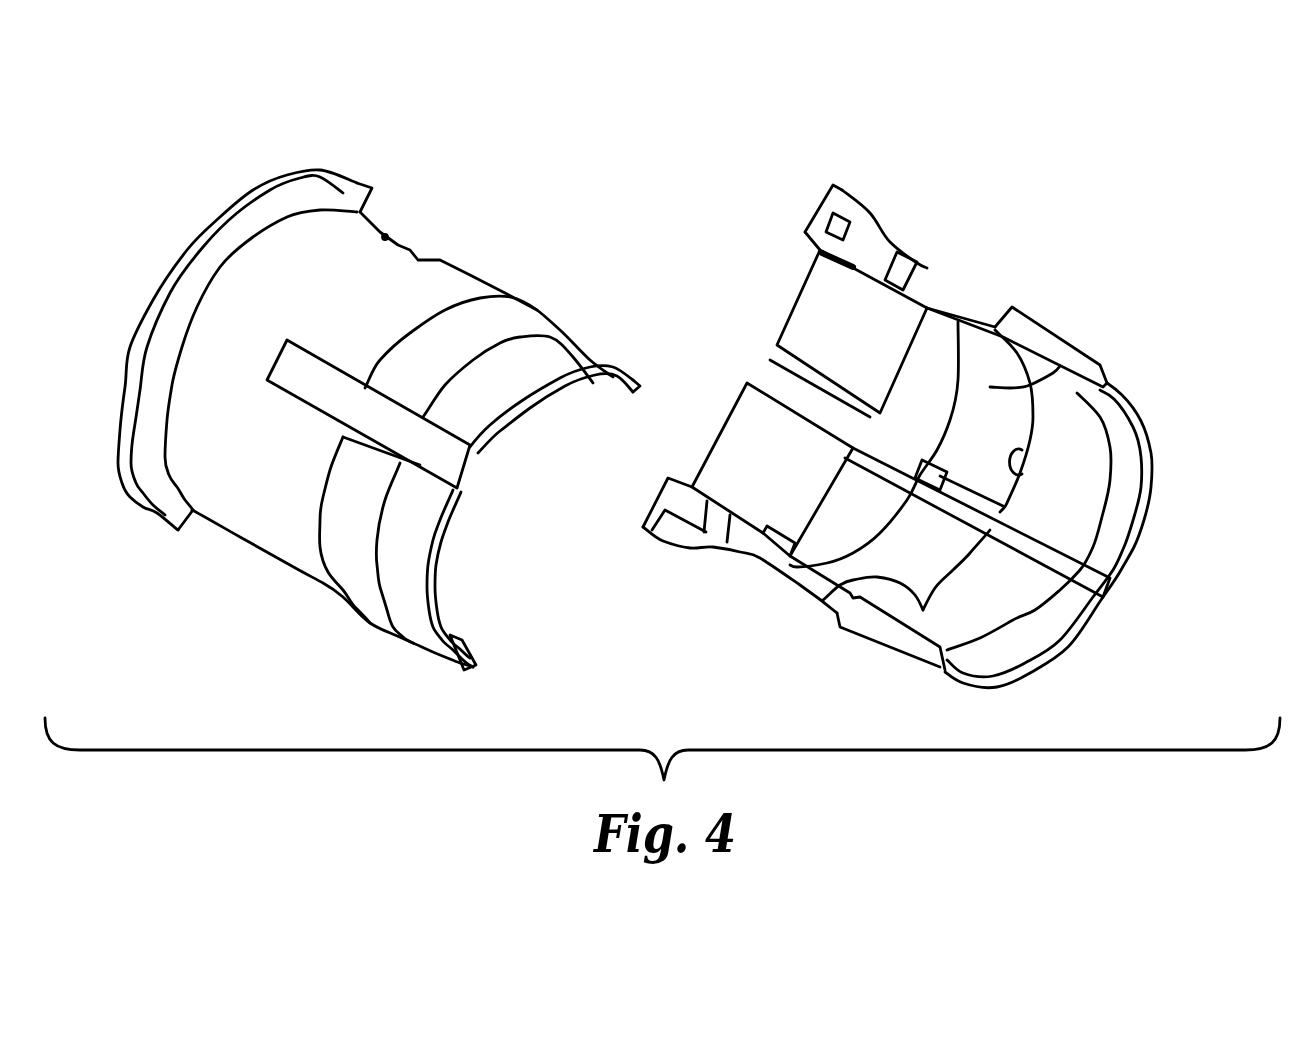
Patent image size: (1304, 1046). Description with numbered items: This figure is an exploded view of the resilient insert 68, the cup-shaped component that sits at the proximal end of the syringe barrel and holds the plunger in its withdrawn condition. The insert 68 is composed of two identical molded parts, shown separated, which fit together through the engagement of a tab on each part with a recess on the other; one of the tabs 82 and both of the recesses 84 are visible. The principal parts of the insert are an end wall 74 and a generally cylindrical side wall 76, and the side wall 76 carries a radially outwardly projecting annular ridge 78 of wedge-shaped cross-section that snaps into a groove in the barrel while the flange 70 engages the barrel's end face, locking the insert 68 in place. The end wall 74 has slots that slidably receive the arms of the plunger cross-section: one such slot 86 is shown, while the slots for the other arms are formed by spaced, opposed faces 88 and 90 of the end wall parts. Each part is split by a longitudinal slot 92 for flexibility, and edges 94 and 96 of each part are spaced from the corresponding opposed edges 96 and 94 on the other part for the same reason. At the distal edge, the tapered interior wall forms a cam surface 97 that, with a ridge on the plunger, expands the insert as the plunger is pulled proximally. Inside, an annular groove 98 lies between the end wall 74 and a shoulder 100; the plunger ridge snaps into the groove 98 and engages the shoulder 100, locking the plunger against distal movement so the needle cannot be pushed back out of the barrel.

The insert 68 is at (524, 229).
The flange 70 is at (337, 195).
The end wall 74 is at (787, 303).
The side wall 76 is at (283, 530).
The annular ridge 78 is at (527, 318).
The tab 82 is at (900, 270).
The recess 84 is at (413, 250).
The slot 86 is at (767, 390).
The face 88 is at (818, 277).
The face 90 is at (720, 455).
The longitudinal slot 92 is at (323, 387).
The edge 94 is at (473, 667).
The edge 96 is at (633, 383).
The cam surface 97 is at (1117, 520).
The annular groove 98 is at (1060, 366).
The shoulder 100 is at (1030, 477).